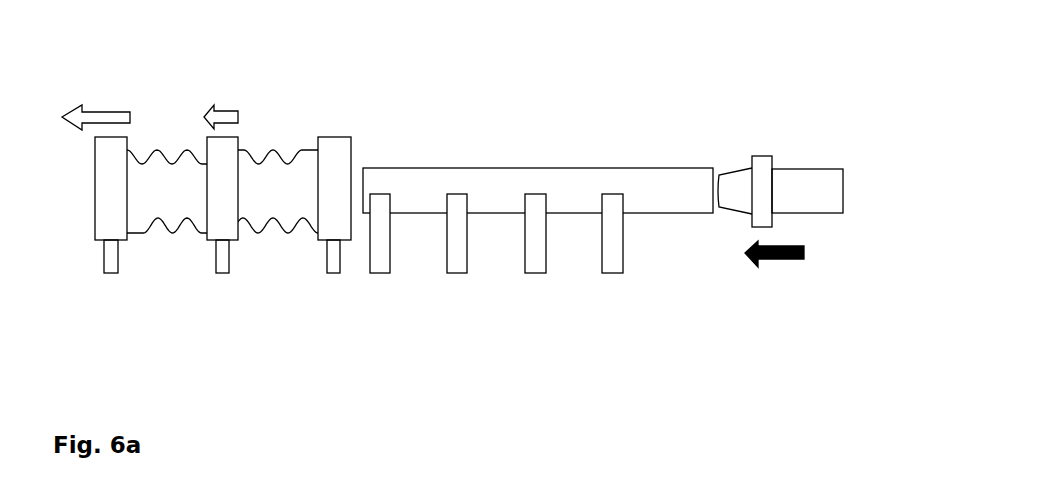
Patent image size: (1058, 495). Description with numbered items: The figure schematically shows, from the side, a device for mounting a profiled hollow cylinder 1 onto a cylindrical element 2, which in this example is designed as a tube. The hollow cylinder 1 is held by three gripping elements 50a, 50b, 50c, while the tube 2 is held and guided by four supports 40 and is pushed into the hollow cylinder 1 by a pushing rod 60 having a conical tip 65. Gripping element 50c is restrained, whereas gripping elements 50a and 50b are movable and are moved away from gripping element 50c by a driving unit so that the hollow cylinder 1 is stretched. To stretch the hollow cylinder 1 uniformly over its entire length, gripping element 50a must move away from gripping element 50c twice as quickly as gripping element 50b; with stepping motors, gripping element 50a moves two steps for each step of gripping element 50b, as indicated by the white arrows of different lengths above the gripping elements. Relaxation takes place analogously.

The profiled hollow cylinder 1 is at (162, 148).
The cylindrical element 2 is at (485, 176).
The supports 40 is at (460, 267).
The gripping element 50a is at (112, 267).
The gripping element 50b is at (221, 267).
The gripping element 50c is at (330, 267).
The pushing rod 60 is at (797, 182).
The conical tip 65 is at (740, 176).